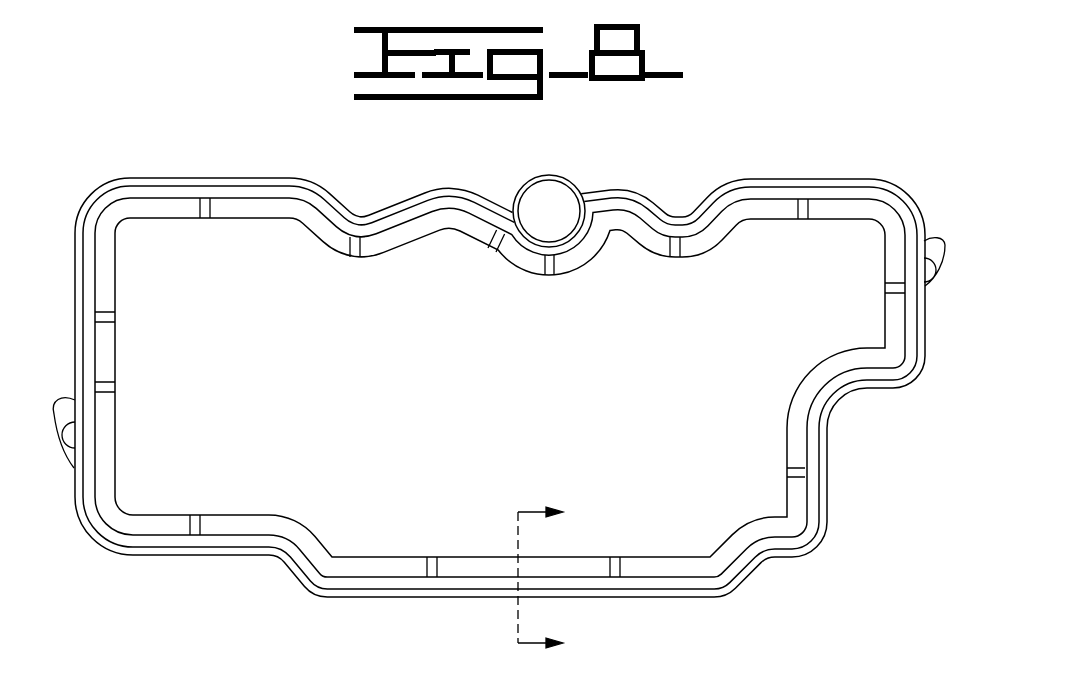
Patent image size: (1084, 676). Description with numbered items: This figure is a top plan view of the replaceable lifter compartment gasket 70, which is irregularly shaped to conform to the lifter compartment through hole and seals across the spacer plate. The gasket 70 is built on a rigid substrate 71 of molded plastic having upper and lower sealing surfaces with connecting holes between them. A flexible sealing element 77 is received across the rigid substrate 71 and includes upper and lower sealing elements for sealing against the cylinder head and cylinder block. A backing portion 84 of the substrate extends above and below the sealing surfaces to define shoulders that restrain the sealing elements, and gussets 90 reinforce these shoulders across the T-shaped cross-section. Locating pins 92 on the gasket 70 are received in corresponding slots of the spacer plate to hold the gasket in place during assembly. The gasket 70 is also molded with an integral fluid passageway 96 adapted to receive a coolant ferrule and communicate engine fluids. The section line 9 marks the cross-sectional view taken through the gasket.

The gasket 70 is at (499, 357).
The rigid substrate 71 is at (115, 355).
The flexible sealing element 77 is at (260, 178).
The backing portion 84 is at (262, 513).
The gussets 90 is at (425, 565).
The locating pins 92 is at (60, 402).
The integral fluid passageway 96 is at (553, 176).
The section line 9- 9 is at (524, 580).